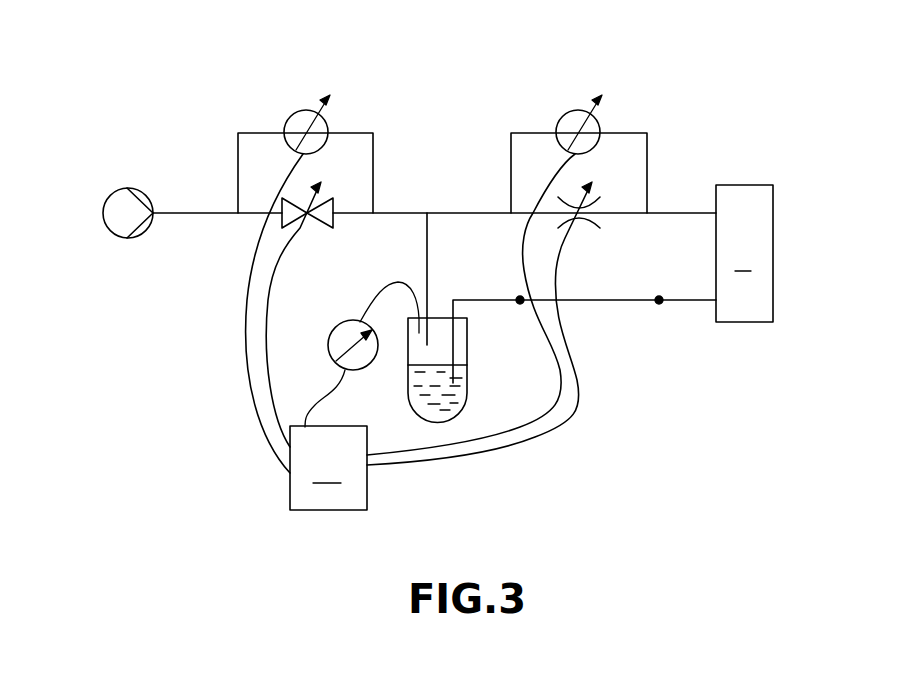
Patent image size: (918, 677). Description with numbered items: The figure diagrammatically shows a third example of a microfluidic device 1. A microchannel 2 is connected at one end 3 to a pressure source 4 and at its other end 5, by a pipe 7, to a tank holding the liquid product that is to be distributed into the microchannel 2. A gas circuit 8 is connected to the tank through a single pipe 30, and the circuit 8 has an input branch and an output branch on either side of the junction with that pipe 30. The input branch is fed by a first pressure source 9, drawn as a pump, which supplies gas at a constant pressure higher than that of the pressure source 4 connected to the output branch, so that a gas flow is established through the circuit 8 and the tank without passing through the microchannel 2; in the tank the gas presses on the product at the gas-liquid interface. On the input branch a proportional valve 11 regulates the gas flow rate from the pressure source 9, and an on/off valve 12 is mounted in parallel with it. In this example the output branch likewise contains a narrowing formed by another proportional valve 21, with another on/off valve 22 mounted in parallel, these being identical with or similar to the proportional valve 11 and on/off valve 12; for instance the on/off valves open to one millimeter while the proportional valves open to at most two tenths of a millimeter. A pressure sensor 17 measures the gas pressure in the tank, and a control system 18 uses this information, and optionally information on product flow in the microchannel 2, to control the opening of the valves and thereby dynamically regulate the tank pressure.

The microfluidic device 1 is at (160, 437).
The microchannel 2 is at (601, 305).
The end 3 is at (659, 305).
The pressure source 4 is at (744, 253).
The other end 5 is at (520, 305).
The pipe 7 is at (483, 302).
The circuit 8 is at (427, 184).
The first pressure source 9 is at (106, 229).
The proportional valve 11 is at (327, 199).
The on/off valve 12 is at (322, 118).
The pressure sensor 17 is at (334, 329).
The control system 18 is at (419, 332).
The proportional valve 21 is at (600, 200).
The on/off valve 22 is at (594, 118).
The pipe 30 is at (430, 245).